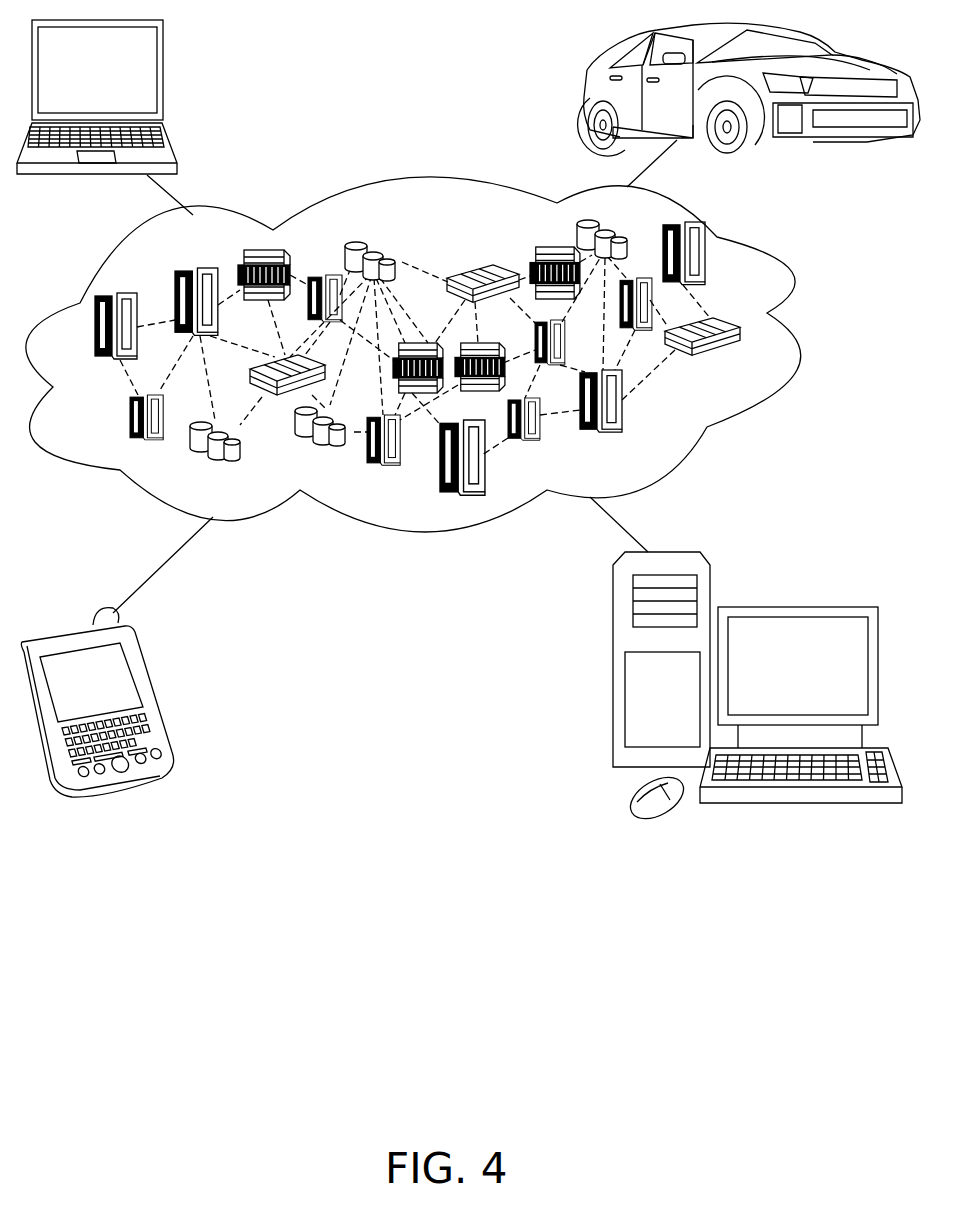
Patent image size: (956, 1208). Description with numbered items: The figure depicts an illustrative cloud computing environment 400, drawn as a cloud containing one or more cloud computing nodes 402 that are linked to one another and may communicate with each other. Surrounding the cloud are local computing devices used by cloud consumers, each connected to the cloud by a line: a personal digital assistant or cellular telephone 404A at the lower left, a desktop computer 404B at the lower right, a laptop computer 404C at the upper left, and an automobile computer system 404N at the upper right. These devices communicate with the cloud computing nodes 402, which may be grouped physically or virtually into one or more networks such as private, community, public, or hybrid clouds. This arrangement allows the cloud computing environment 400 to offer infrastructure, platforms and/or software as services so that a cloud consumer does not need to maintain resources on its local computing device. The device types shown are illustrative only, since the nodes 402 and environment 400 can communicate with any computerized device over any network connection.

The cloud computing environment 400 is at (752, 330).
The cloud computing nodes 402 is at (745, 366).
The personal digital assistant or cellular telephone 404A is at (144, 664).
The desktop computer 404B is at (785, 607).
The laptop computer 404C is at (163, 55).
The automobile computer system 404N is at (587, 94).